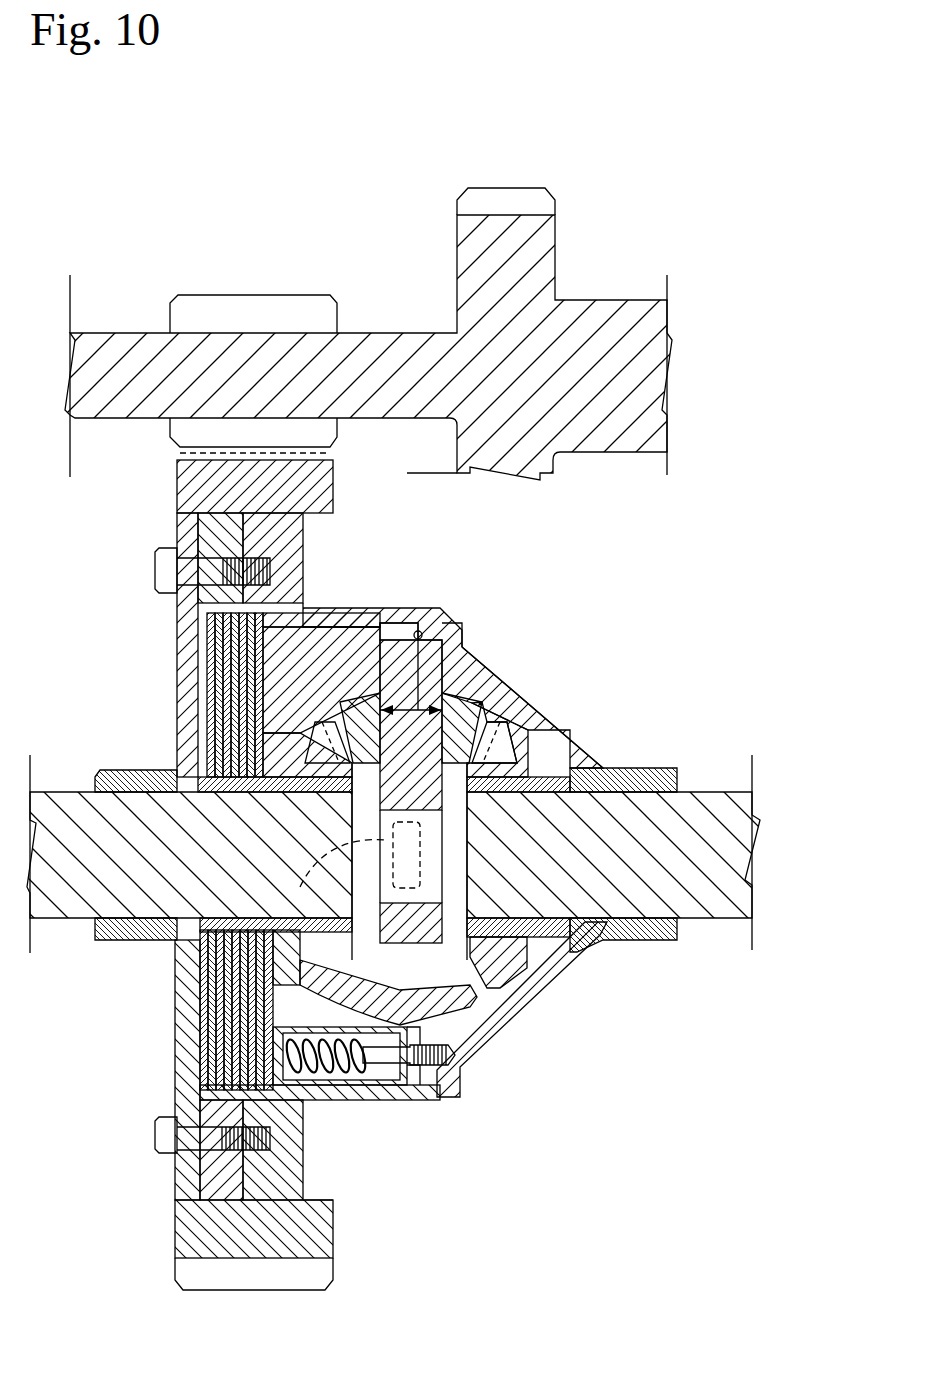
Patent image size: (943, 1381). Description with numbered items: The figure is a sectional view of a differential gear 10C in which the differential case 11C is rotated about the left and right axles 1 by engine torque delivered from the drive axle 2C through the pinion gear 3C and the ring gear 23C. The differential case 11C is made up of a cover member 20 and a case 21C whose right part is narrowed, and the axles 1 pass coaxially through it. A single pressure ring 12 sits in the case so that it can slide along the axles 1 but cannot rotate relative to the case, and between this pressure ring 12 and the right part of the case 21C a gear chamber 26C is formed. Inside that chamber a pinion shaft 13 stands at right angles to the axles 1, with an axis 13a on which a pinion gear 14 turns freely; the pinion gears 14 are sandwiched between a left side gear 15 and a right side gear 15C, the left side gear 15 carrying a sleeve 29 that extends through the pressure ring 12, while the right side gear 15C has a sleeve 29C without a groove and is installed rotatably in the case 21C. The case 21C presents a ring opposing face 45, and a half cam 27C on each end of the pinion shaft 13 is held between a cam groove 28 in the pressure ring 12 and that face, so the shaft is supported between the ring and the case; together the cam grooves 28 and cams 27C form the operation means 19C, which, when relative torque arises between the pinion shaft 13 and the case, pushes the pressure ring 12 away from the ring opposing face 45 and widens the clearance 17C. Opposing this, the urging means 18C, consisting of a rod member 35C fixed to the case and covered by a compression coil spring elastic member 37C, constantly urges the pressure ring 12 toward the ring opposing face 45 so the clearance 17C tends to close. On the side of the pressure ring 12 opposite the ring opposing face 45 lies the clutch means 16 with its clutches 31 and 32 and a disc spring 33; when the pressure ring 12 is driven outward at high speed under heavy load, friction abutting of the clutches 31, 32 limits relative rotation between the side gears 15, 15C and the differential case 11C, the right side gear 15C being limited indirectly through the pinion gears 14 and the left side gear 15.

The axle 1 is at (72, 790).
The drive axle 2C is at (403, 337).
The pinion gear 3C is at (233, 305).
The differential gear 10C is at (630, 645).
The differential case 11C is at (578, 738).
The pressure ring 12 is at (310, 632).
The pinion shaft 13 is at (460, 842).
The axis 13a is at (442, 795).
The pinion gear 14 is at (518, 712).
The side gear 15 is at (300, 793).
The side gear 15C is at (548, 913).
The clutch means 16 is at (210, 1107).
The clearance 17C is at (410, 715).
The urging means 18C is at (418, 1090).
The operation means 19C is at (450, 677).
The cover member 20 is at (177, 1018).
The case 21C is at (588, 958).
The ring gear 23C is at (185, 490).
The gear chamber 26C is at (467, 1002).
The cam 27C is at (417, 631).
The cam groove 28 is at (392, 628).
The sleeve 29 is at (215, 943).
The sleeve 29C is at (524, 970).
The clutch 31 is at (252, 662).
The clutch 32 is at (240, 730).
The disc spring 33 is at (200, 1052).
The rod member 35C is at (385, 1062).
The elastic member 37C is at (310, 1080).
The ring opposing face 45 is at (455, 632).